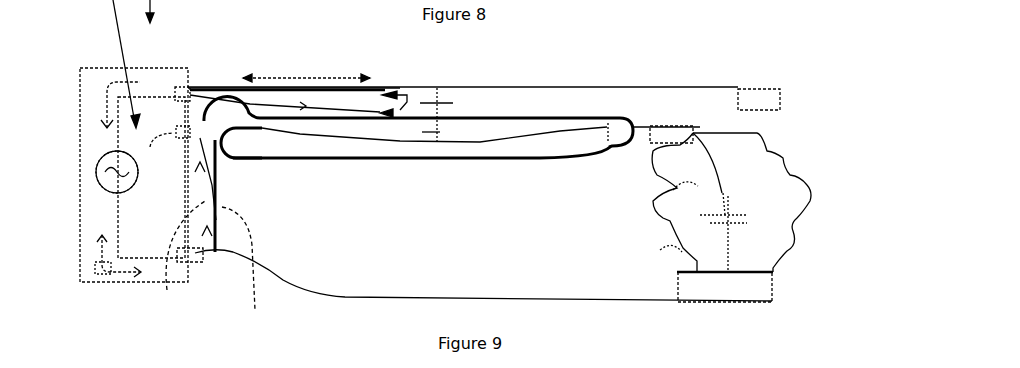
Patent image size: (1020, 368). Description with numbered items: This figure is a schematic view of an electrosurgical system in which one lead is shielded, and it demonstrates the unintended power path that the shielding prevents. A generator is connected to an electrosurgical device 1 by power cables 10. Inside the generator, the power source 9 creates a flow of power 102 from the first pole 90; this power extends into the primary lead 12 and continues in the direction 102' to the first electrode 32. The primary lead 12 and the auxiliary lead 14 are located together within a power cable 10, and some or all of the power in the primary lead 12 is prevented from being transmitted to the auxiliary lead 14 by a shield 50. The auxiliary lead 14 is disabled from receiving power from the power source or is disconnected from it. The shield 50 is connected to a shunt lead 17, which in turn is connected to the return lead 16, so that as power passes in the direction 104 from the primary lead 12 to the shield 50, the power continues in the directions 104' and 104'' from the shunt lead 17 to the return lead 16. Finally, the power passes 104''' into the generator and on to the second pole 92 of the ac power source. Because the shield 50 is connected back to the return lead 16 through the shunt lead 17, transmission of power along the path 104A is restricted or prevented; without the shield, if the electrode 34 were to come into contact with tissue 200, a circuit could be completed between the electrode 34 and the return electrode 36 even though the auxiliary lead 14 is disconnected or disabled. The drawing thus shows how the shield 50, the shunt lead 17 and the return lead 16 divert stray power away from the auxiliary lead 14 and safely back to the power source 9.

The electrosurgical device 1 is at (657, 72).
The power source 9 is at (98, 172).
The power cables 10 is at (560, 62).
The primary lead 12 is at (220, 88).
The auxiliary lead 14 is at (272, 138).
The return lead 16 is at (345, 296).
The shunt lead 17 is at (244, 275).
The first electrode 32 is at (760, 97).
The electrode 34 is at (700, 127).
The return electrode 36 is at (760, 287).
The shield 50 is at (543, 160).
The first pole 90 is at (122, 152).
The second pole 92 is at (112, 207).
The flow of power 102 is at (93, 143).
The direction of power flow 102' is at (306, 70).
The direction of power flow 104 is at (441, 95).
The direction of power flow 104' is at (239, 48).
The direction of power flow 104'' is at (182, 231).
The power passage 104''' is at (81, 296).
The power path 104A is at (723, 191).
The tissue 200 is at (780, 171).